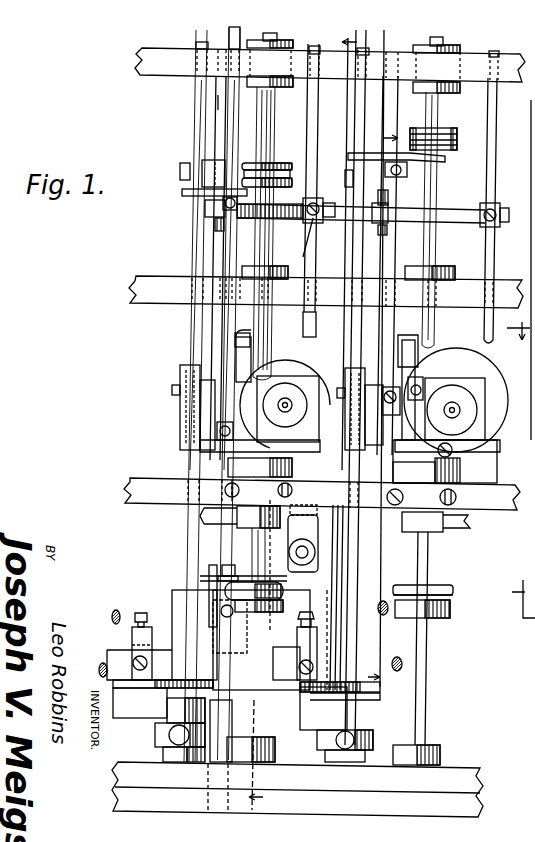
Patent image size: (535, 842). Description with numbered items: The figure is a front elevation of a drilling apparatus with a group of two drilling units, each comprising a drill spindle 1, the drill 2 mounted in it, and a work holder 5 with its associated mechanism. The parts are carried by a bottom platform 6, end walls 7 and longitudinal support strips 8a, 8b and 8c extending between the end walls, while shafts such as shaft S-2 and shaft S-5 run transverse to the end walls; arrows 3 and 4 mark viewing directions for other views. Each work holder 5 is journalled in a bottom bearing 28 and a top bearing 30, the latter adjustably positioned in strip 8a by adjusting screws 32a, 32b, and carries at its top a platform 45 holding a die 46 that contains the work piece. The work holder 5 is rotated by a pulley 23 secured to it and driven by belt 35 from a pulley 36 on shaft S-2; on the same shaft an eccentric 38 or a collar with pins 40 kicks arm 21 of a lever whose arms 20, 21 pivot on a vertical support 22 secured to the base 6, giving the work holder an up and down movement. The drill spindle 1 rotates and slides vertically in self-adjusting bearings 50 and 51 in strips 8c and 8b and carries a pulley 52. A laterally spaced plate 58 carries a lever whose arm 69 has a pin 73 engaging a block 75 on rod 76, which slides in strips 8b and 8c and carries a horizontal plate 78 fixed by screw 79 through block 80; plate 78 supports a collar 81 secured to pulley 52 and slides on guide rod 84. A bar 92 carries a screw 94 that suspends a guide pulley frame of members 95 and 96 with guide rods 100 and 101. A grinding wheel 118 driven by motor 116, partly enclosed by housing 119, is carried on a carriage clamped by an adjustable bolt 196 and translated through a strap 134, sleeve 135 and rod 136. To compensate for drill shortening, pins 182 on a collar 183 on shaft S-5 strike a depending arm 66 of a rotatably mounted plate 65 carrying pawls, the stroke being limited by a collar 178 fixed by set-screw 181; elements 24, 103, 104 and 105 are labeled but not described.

The drill spindle 1 is at (433, 203).
The drill 2 is at (371, 409).
The section line 3 is at (518, 341).
The section line 4 is at (309, 421).
The work holder 5 is at (252, 544).
The bottom platform 6 is at (482, 804).
The end walls 7 is at (436, 358).
The longitudinal support strip 8a is at (125, 490).
The longitudinal support strip 8b is at (130, 292).
The longitudinal support strip 8c is at (136, 64).
The lever arm 20 is at (261, 640).
The lever arm 21 is at (203, 640).
The vertical support 22 is at (215, 757).
The pulley 23 is at (225, 586).
The disc 24 is at (313, 394).
The bottom bearing 28 is at (276, 752).
The top bearing 30 is at (474, 541).
The adjusting screw 32a is at (168, 522).
The adjusting screw 32b is at (292, 490).
The belt 35 is at (453, 588).
The pulley 36 is at (243, 567).
The eccentric 38 is at (209, 572).
The pins 40 is at (228, 565).
The platform 45 is at (218, 462).
The die 46 is at (425, 466).
The self-adjusting bearing 50 is at (293, 44).
The self-adjusting bearing 51 is at (284, 264).
The pulley 52 is at (283, 165).
The plate 58 is at (180, 415).
The rotatably mounted plate 65 is at (160, 700).
The depending arm 66 is at (155, 726).
The lever arm 69 is at (200, 437).
The pin 73 is at (210, 478).
The block 75 is at (260, 458).
The rod 76 is at (230, 256).
The horizontal plate 78 is at (184, 198).
The screw 79 is at (212, 214).
The block 80 is at (234, 216).
The collar 81 is at (456, 152).
The guide rod 84 is at (190, 266).
The bar 92 is at (180, 165).
The screw 94 is at (200, 152).
The frame member 95 is at (266, 152).
The frame member 96 is at (500, 206).
The guide rod 100 is at (308, 133).
The guide rod 101 is at (218, 102).
The lever 103 is at (482, 226).
The rod 104 is at (306, 80).
The bushing 105 is at (496, 284).
The motor 116 is at (490, 367).
The grinding wheel 118 is at (425, 385).
The housing 119 is at (300, 375).
The strap 134 is at (318, 544).
The sleeve 135 is at (312, 570).
The rod 136 is at (318, 552).
The collar 178 is at (160, 740).
The set-screw 181 is at (183, 753).
The pins 182 is at (113, 610).
The collar 183 is at (147, 618).
The adjustable bolt 196 is at (452, 452).
The shaft S-2 is at (95, 585).
The shaft S-5 is at (110, 652).